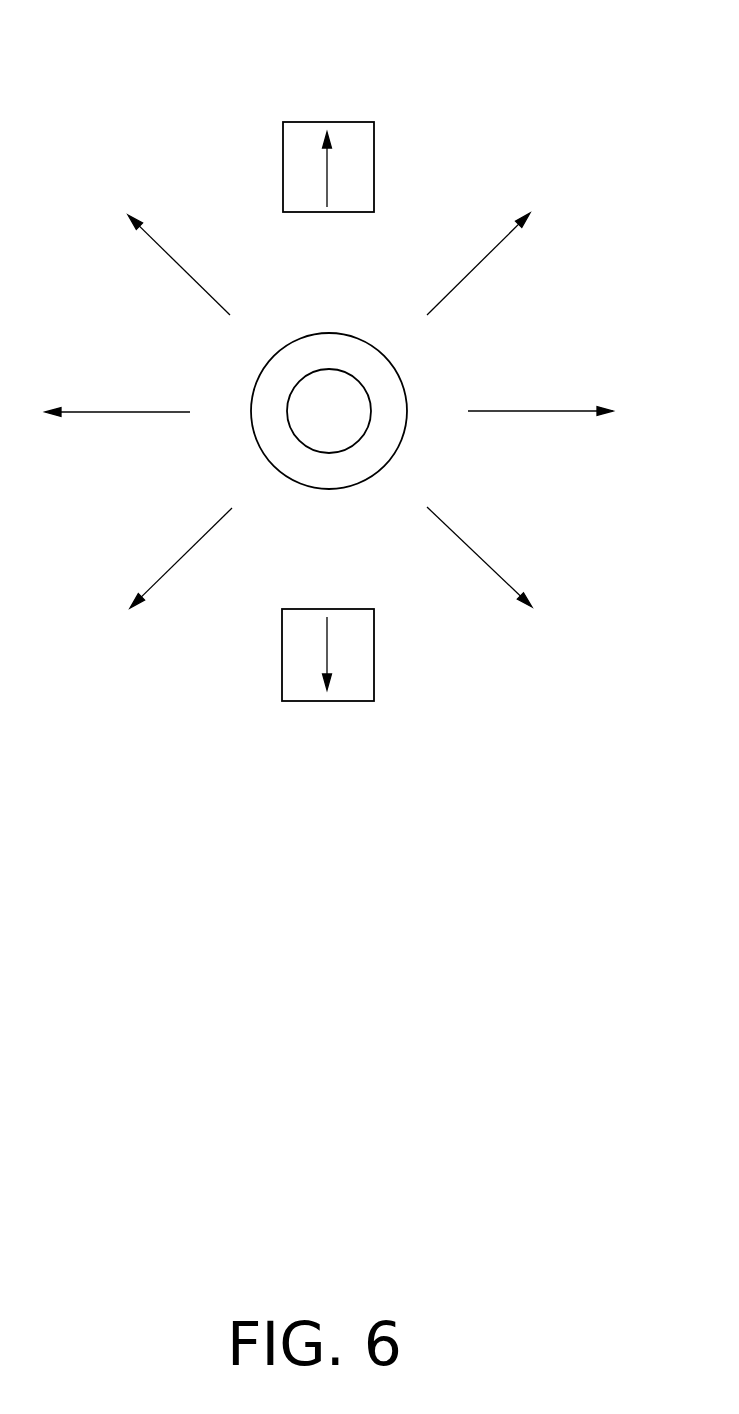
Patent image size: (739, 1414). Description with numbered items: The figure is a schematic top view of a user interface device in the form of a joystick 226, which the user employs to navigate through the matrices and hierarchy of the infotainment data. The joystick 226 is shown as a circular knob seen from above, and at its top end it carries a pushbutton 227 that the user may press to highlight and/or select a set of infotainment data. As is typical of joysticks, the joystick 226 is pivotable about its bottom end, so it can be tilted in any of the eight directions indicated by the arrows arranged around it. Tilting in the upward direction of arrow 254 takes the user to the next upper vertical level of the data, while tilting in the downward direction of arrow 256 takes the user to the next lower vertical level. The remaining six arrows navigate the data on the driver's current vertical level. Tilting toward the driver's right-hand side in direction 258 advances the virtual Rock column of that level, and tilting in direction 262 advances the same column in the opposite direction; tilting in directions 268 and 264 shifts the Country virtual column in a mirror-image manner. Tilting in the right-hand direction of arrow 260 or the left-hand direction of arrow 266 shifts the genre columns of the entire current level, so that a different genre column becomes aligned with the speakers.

The joystick 226 is at (406, 437).
The pushbutton 227 is at (324, 383).
The arrow 254 is at (328, 122).
The arrow 256 is at (327, 701).
The arrow 258 is at (475, 268).
The arrow 260 is at (545, 411).
The arrow 262 is at (470, 550).
The arrow 264 is at (188, 550).
The arrow 266 is at (118, 412).
The arrow 268 is at (182, 268).